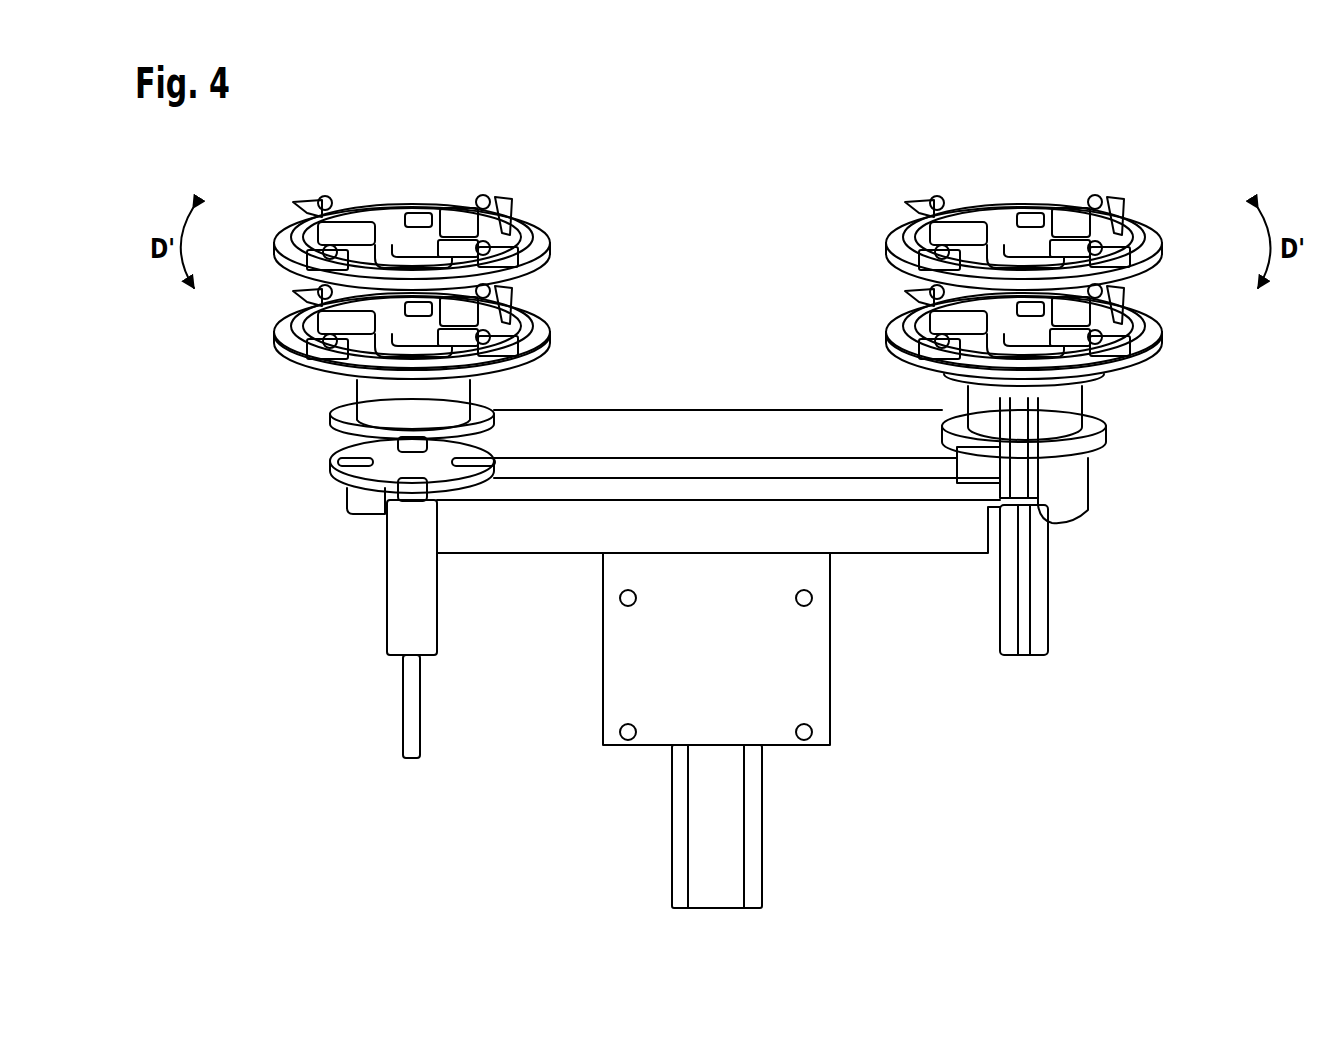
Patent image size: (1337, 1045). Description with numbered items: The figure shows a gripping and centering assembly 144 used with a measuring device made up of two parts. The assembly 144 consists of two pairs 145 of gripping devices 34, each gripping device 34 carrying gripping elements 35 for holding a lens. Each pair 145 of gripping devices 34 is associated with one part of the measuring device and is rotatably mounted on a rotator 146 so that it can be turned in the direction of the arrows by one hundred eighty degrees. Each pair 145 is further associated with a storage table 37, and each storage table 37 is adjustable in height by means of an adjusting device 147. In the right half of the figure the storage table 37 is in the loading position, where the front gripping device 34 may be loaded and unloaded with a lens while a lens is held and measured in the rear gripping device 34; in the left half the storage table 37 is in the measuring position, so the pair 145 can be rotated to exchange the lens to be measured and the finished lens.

The gripping and centering assembly 144 is at (705, 157).
The gripping device 34 is at (530, 203).
The gripping element 35 is at (508, 195).
The pair of gripping devices 145 is at (549, 288).
The rotator 146 is at (372, 392).
The storage table 37 is at (333, 486).
The adjusting device 147 is at (400, 562).